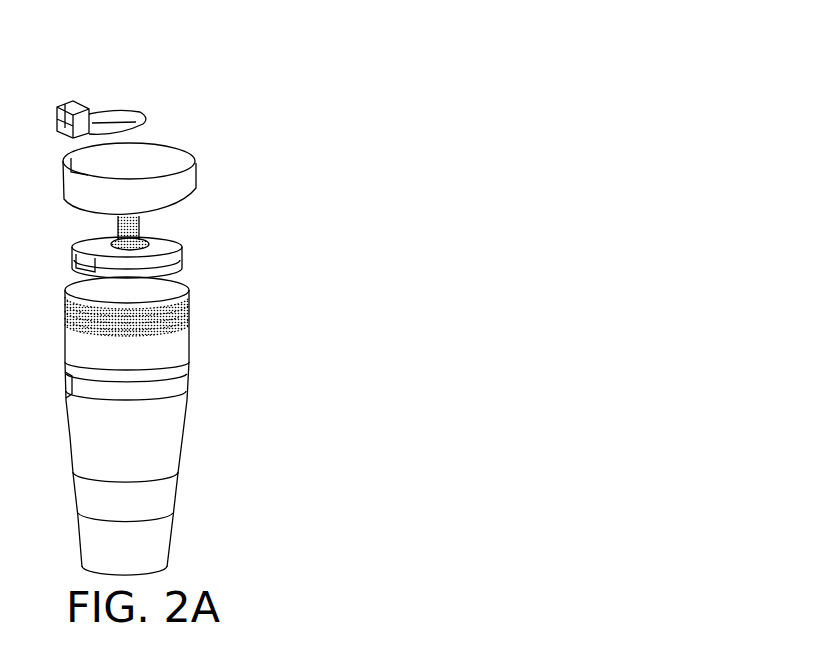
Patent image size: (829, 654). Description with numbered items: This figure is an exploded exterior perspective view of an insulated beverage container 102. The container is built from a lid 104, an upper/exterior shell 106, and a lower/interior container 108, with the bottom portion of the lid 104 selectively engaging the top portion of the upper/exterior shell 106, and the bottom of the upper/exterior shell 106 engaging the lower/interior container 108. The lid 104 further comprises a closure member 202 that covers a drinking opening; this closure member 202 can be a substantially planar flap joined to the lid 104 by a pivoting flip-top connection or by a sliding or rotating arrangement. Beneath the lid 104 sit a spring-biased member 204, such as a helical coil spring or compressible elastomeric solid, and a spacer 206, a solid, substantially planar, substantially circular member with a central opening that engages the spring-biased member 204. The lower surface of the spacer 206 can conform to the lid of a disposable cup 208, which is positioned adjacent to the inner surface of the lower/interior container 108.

The insulated beverage container 102 is at (192, 70).
The closure member 202 is at (163, 117).
The lid 104 is at (210, 184).
The spring-biased member 204 is at (163, 241).
The spacer 206 is at (177, 267).
The upper/exterior shell 106 is at (208, 351).
The disposable cup 208 is at (220, 388).
The lower/interior container 108 is at (187, 490).